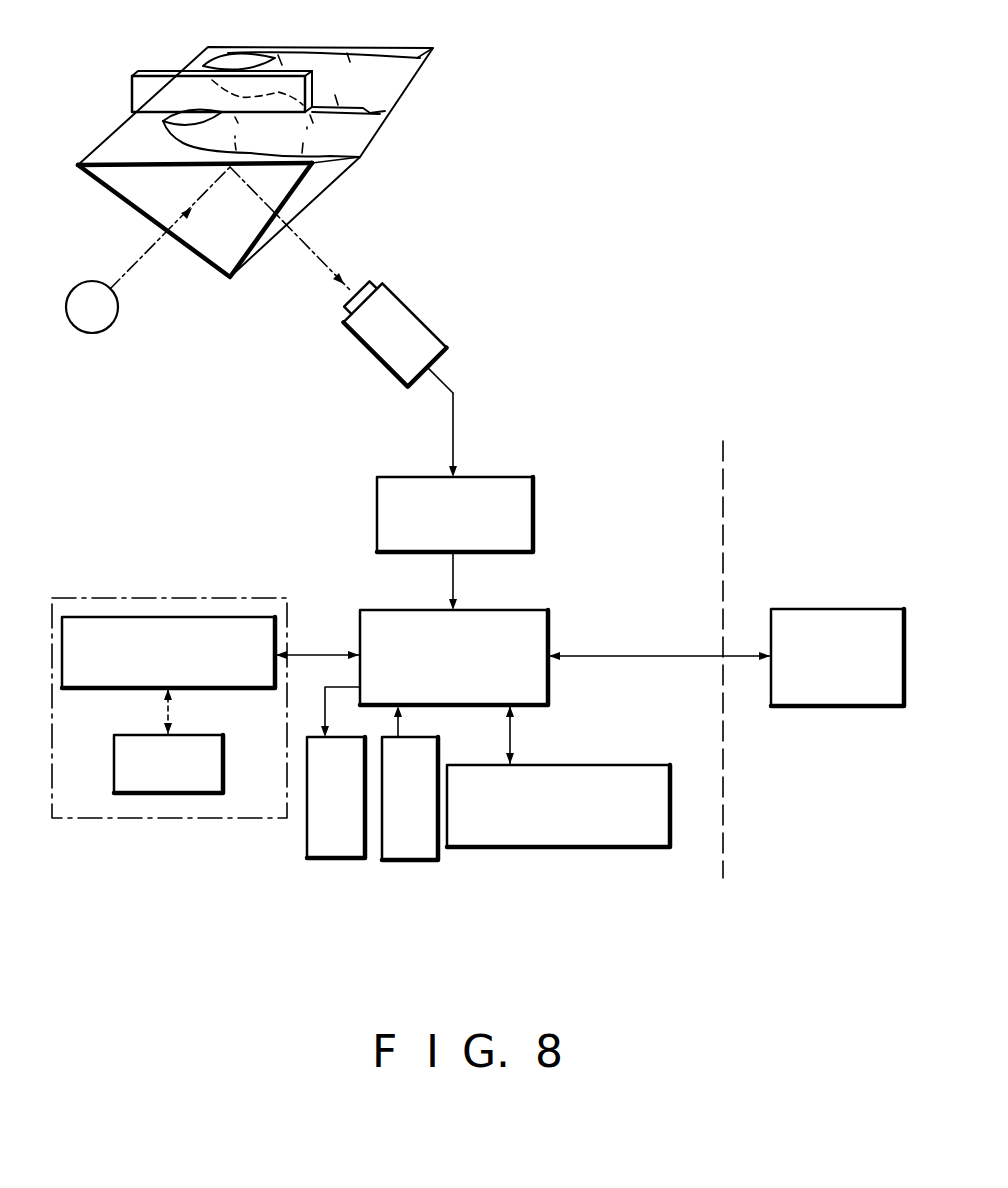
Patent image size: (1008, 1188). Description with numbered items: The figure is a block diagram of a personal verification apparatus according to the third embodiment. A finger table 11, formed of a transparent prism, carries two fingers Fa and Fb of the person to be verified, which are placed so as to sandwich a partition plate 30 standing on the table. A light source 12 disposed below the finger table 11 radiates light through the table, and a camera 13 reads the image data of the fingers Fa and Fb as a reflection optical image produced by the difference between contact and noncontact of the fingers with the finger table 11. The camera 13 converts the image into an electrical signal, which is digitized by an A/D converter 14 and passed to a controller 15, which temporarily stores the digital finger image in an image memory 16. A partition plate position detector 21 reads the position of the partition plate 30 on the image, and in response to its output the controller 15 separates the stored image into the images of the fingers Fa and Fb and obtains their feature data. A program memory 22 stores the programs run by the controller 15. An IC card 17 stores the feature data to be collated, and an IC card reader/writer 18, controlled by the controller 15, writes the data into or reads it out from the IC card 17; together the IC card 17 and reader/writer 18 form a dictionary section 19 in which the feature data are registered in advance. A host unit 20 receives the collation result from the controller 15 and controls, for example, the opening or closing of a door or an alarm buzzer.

The finger table 11 is at (250, 254).
The light source 12 is at (118, 311).
The camera 13 is at (432, 342).
The A/D converter 14 is at (534, 512).
The controller 15 is at (535, 707).
The image memory 16 is at (311, 859).
The IC card 17 is at (220, 782).
The IC card reader/writer 18 is at (245, 688).
The dictionary section 19 is at (92, 818).
The host unit 20 is at (854, 702).
The partition plate position detector 21 is at (630, 842).
The program memory 22 is at (425, 858).
The partition plate 30 is at (150, 90).
The finger Fa is at (163, 124).
The finger Fb is at (333, 60).